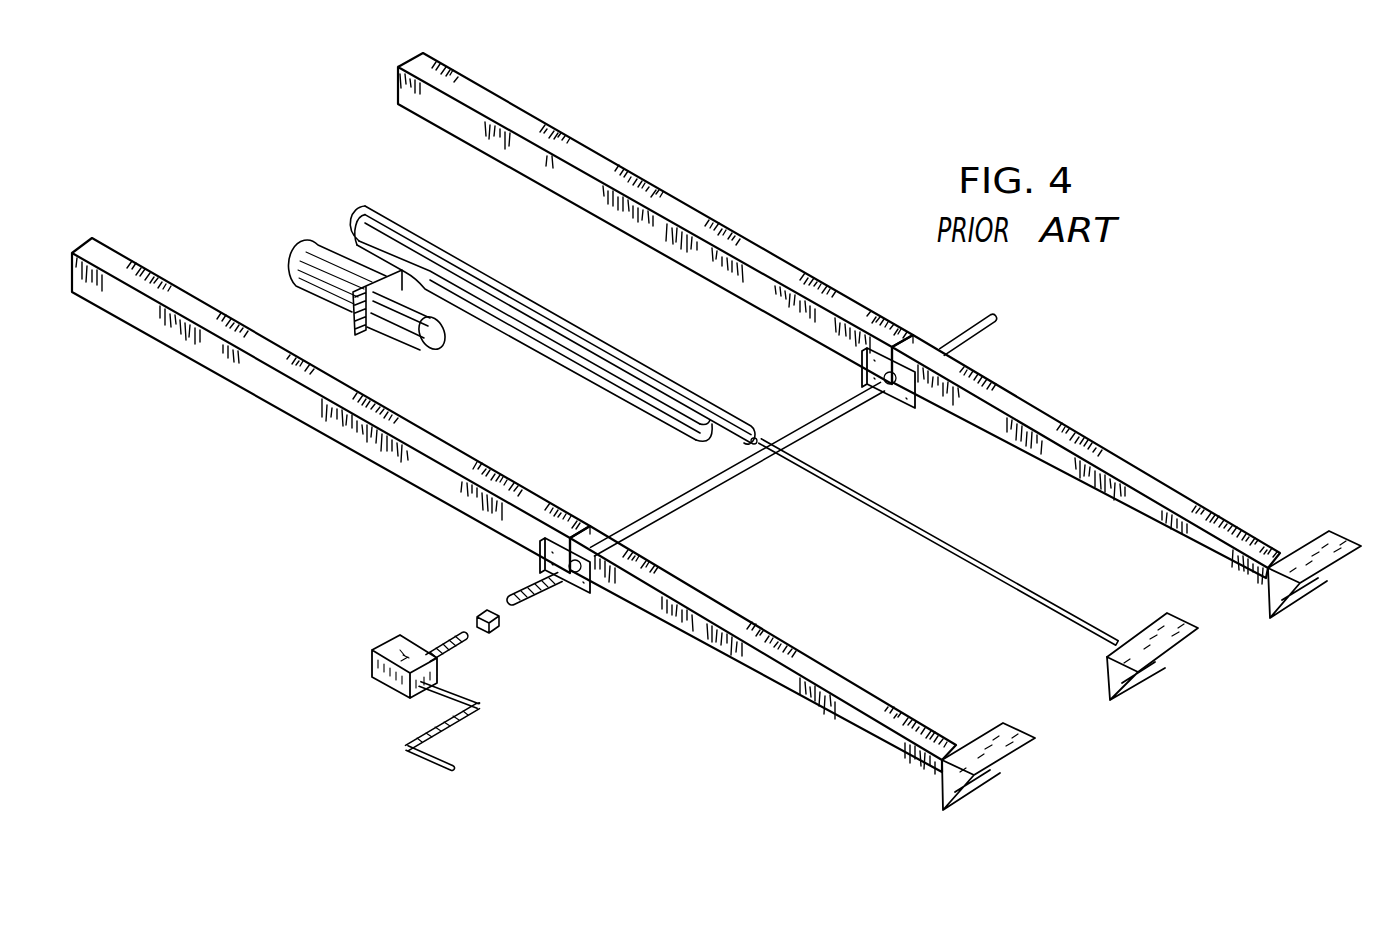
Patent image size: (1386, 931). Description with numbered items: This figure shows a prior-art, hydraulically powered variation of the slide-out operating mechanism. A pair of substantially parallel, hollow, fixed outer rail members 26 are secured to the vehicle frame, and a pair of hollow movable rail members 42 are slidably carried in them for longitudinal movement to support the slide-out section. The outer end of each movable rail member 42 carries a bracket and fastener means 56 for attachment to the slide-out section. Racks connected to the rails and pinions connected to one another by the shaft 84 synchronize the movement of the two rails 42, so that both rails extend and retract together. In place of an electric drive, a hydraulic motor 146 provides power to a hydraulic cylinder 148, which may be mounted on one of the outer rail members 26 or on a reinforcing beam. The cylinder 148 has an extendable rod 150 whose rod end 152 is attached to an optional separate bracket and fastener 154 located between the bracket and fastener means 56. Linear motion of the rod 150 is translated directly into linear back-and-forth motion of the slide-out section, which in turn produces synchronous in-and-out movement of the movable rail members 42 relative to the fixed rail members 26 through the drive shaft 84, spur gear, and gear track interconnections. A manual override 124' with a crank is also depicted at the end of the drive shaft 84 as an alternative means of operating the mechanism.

The outer rail member 26 is at (722, 220).
The movable rail member 42 is at (1158, 474).
The bracket and fastener means 56 is at (1317, 547).
The shaft 84 is at (723, 482).
The drive block with crank 124' is at (435, 669).
The hydraulic motor 146 is at (293, 250).
The hydraulic cylinder 148 is at (447, 262).
The extendable rod 150 is at (962, 553).
The rod end 152 is at (1120, 650).
The separate bracket and fastener 154 is at (1157, 677).